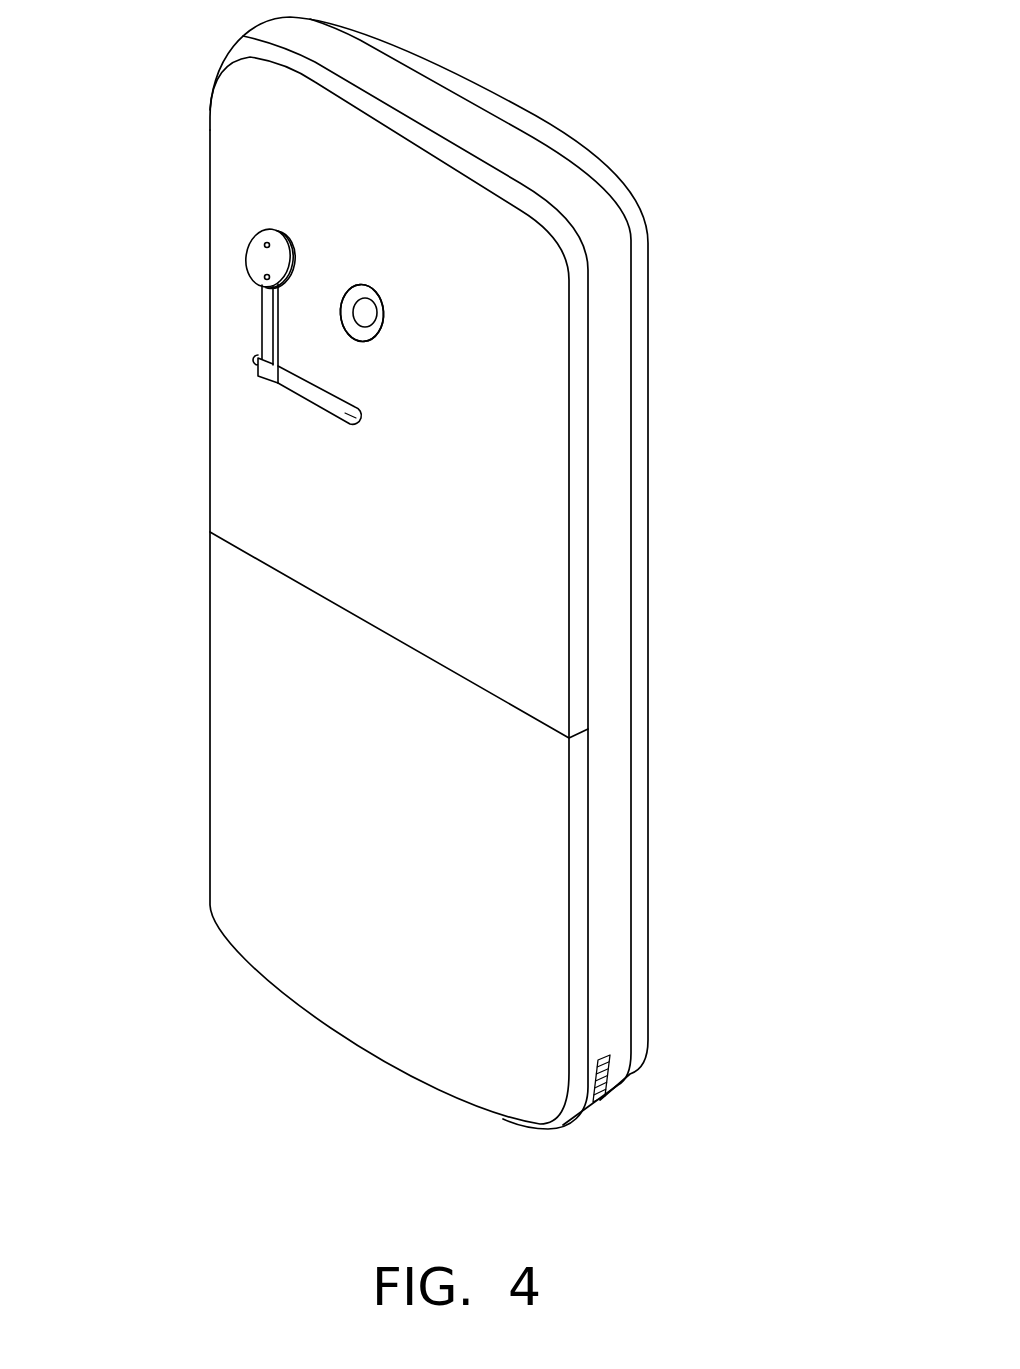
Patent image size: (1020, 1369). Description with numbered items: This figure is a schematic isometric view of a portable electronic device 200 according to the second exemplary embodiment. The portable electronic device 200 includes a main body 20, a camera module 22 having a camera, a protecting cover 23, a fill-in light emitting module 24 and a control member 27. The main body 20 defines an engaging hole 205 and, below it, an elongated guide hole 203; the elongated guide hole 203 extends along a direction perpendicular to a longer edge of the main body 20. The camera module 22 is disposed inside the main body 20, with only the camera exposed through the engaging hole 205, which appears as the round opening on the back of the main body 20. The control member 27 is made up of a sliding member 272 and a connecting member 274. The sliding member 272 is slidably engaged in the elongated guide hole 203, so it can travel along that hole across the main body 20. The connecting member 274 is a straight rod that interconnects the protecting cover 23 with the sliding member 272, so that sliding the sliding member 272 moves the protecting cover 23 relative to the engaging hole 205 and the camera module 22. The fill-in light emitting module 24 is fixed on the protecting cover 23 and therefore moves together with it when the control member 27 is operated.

The portable electronic device 200 is at (409, 573).
The main body 20 is at (535, 585).
The camera module 22 is at (365, 318).
The engaging hole 205 is at (381, 306).
The protecting cover 23 is at (201, 243).
The fill-in light emitting module 24 is at (263, 243).
The control member 27 is at (159, 333).
The connecting member 274 is at (262, 306).
The sliding member 272 is at (253, 361).
The elongated guide hole 203 is at (360, 419).